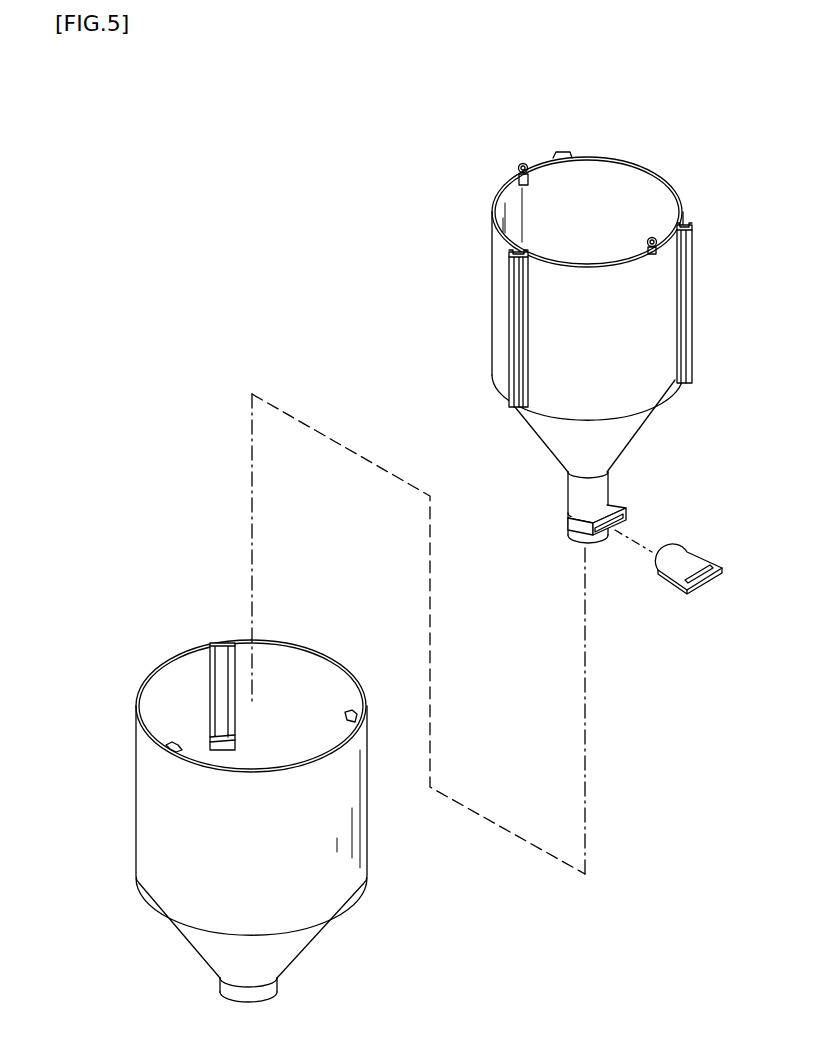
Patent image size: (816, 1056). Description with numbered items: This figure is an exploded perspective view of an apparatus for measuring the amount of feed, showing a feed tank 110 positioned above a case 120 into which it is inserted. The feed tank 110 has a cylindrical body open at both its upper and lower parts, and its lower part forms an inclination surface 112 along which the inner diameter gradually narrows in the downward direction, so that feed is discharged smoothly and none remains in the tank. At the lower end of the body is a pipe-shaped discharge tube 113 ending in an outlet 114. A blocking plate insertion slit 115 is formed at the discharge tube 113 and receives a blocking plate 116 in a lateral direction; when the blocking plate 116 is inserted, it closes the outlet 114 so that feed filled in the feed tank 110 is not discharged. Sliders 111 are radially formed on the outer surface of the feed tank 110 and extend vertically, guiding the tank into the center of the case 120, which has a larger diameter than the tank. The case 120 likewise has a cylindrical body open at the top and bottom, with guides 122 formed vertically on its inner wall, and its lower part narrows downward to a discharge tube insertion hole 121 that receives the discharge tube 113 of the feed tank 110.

The feed tank 110 is at (645, 177).
The slider 111 is at (508, 278).
The inclination surface 112 is at (642, 427).
The discharge tube 113 is at (578, 484).
The outlet 114 is at (572, 543).
The blocking plate insertion slit 115 is at (617, 498).
The blocking plate 116 is at (697, 560).
The case 120 is at (148, 809).
The discharge tube insertion hole 121 is at (263, 992).
The guide 122 is at (227, 643).